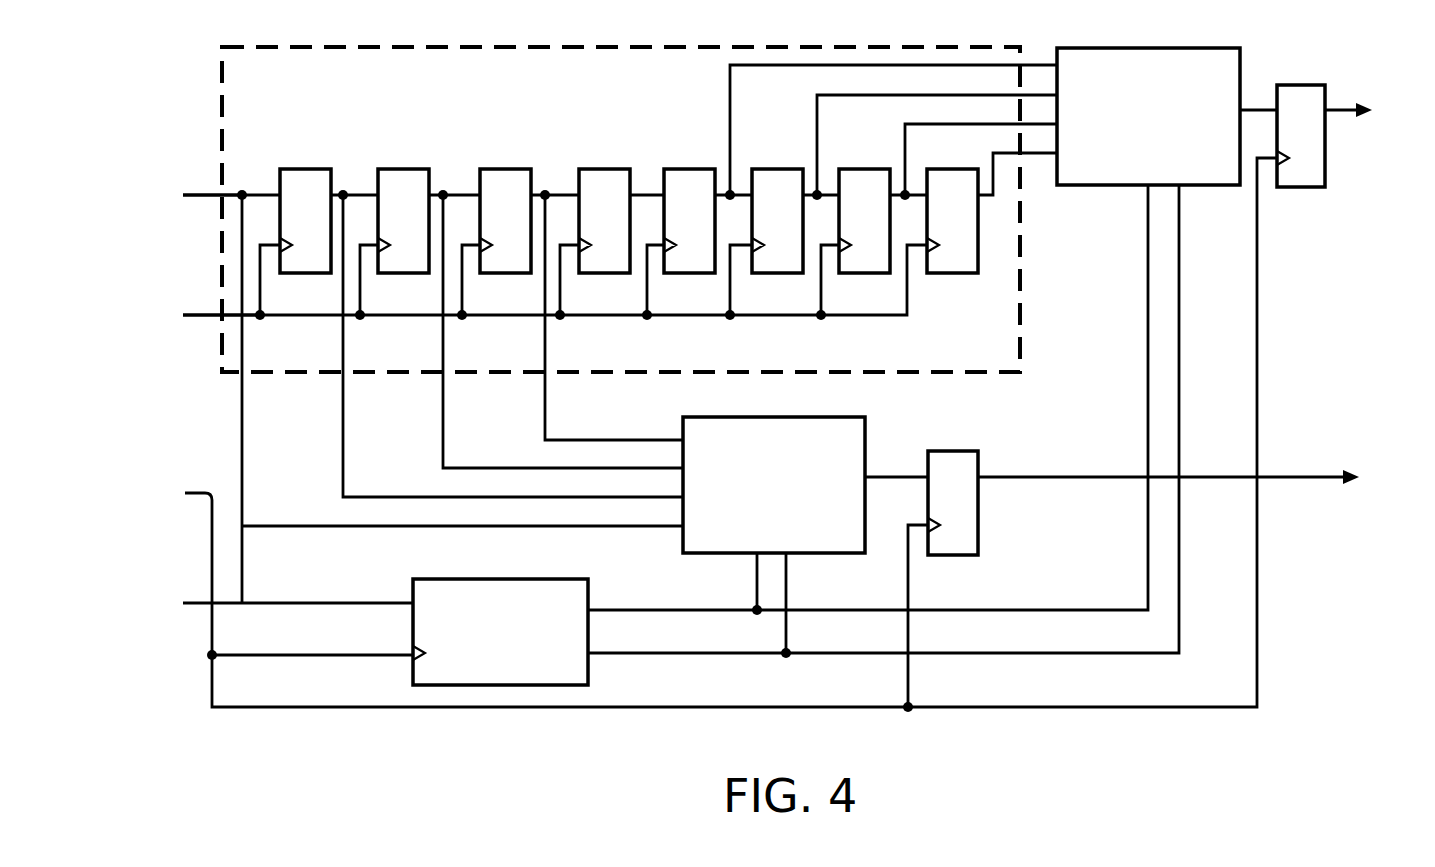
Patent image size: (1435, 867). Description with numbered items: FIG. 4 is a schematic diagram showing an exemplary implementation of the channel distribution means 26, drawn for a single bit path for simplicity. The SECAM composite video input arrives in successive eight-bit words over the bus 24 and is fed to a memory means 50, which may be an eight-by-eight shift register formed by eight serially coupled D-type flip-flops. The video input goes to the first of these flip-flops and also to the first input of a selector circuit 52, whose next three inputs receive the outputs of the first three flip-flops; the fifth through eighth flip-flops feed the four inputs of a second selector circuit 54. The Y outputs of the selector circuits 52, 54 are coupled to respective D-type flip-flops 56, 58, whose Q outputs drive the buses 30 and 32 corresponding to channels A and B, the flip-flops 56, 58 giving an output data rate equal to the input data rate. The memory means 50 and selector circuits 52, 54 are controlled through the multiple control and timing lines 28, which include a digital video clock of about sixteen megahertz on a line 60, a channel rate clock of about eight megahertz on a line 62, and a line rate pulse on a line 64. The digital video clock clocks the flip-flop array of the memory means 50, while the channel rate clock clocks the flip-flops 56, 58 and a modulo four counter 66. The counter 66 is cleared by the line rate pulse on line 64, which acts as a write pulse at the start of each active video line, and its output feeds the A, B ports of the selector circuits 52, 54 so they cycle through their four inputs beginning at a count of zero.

The bus 24 is at (203, 195).
The channel distribution means 26 is at (1015, 538).
The control and timing lines 28 is at (226, 316).
The bus 30 is at (1338, 105).
The bus 32 is at (1285, 477).
The memory means 50 is at (620, 325).
The selector circuit 52 is at (790, 417).
The second selector circuit 54 is at (1142, 48).
The D-type flip-flop 56 is at (958, 451).
The D-type flip-flop 58 is at (1285, 85).
The line 60 is at (210, 315).
The line 62 is at (198, 493).
The line 64 is at (197, 605).
The modulo 4 counter 66 is at (505, 570).